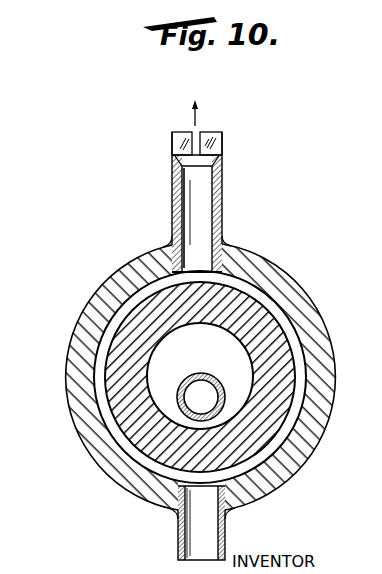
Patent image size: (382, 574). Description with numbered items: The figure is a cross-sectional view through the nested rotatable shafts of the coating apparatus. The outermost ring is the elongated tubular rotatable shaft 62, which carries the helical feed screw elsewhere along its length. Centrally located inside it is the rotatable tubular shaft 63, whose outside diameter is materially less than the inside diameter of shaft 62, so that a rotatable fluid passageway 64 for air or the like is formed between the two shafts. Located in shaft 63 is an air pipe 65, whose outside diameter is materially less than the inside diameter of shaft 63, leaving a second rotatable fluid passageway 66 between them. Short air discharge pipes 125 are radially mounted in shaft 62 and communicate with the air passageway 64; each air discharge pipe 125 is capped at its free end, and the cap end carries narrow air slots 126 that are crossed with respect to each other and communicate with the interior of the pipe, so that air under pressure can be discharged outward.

The tubular rotatable shaft 62 is at (123, 268).
The rotatable tubular shaft 63 is at (258, 320).
The fluid passageway 64 is at (262, 297).
The air pipe 65 is at (203, 375).
The fluid passageway 66 is at (182, 356).
The air discharge pipe 125 is at (218, 196).
The air slot 126 is at (220, 148).